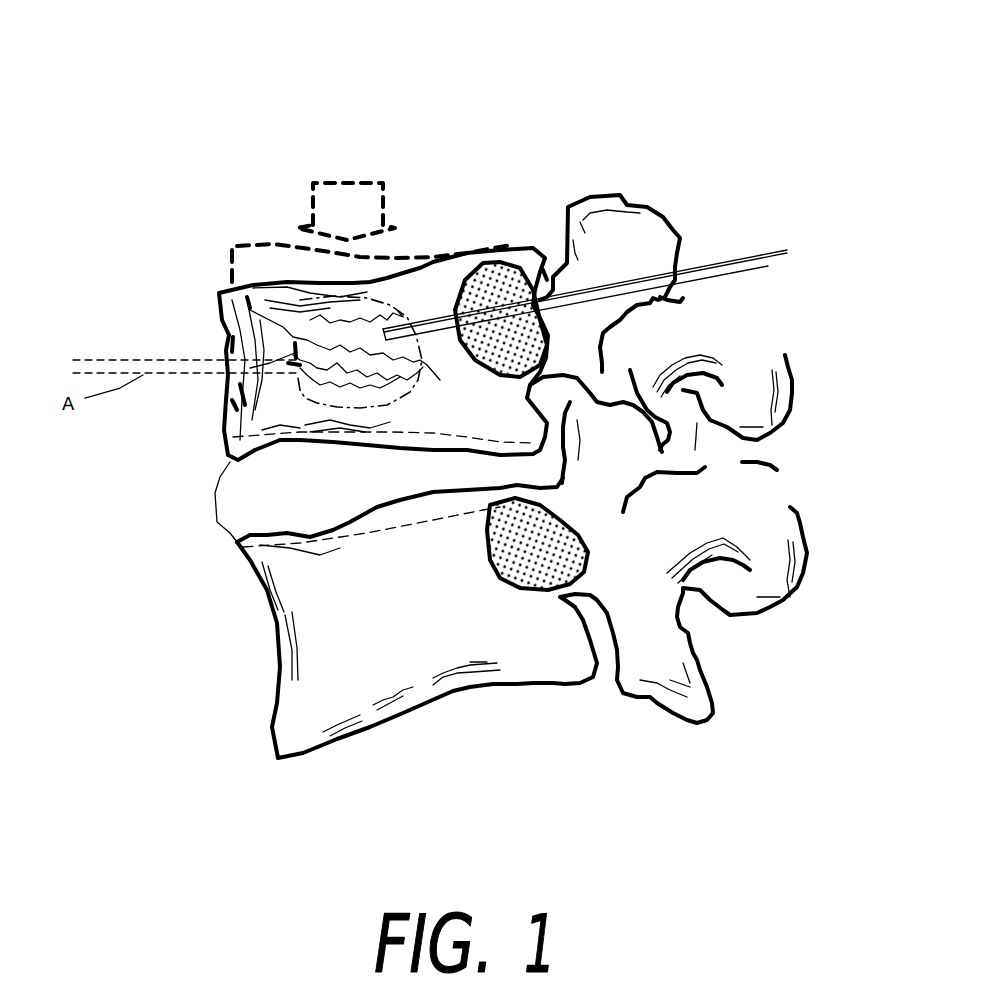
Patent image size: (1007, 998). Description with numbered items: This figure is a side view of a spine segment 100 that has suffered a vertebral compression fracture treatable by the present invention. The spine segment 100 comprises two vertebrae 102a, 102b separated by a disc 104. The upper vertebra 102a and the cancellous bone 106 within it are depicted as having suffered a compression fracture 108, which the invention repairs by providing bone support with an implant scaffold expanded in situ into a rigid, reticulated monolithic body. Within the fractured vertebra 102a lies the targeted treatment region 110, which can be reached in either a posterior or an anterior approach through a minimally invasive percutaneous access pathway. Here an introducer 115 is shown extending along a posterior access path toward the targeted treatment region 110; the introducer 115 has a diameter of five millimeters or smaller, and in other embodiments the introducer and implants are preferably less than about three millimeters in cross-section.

The spine segment 100 is at (235, 90).
The vertebra 102a is at (223, 335).
The vertebra 102b is at (260, 680).
The disc 104 is at (217, 513).
The cancellous bone 106 is at (298, 382).
The compression fracture 108 is at (215, 293).
The targeted treatment region 110 is at (305, 330).
The introducer 115 is at (745, 252).